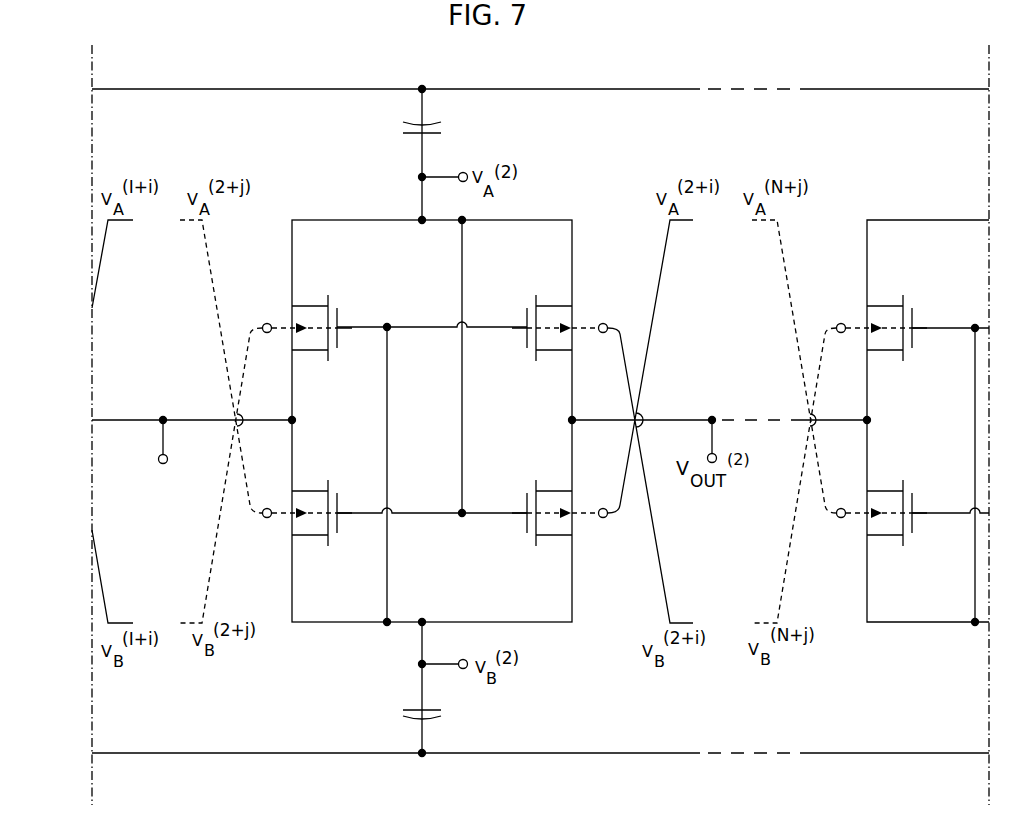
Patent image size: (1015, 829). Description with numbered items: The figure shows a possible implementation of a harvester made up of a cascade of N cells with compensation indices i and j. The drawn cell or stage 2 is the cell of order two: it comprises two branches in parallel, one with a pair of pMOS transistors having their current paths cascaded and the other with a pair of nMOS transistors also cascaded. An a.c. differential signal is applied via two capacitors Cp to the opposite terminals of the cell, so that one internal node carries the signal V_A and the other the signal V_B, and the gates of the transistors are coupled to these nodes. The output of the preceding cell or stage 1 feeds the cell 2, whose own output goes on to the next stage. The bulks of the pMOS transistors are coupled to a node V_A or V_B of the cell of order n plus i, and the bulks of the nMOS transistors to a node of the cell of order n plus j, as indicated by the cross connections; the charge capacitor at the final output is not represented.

The cell or stage 1 is at (168, 454).
The cell or stage 2 is at (432, 421).
The capacitor Cp is at (483, 724).